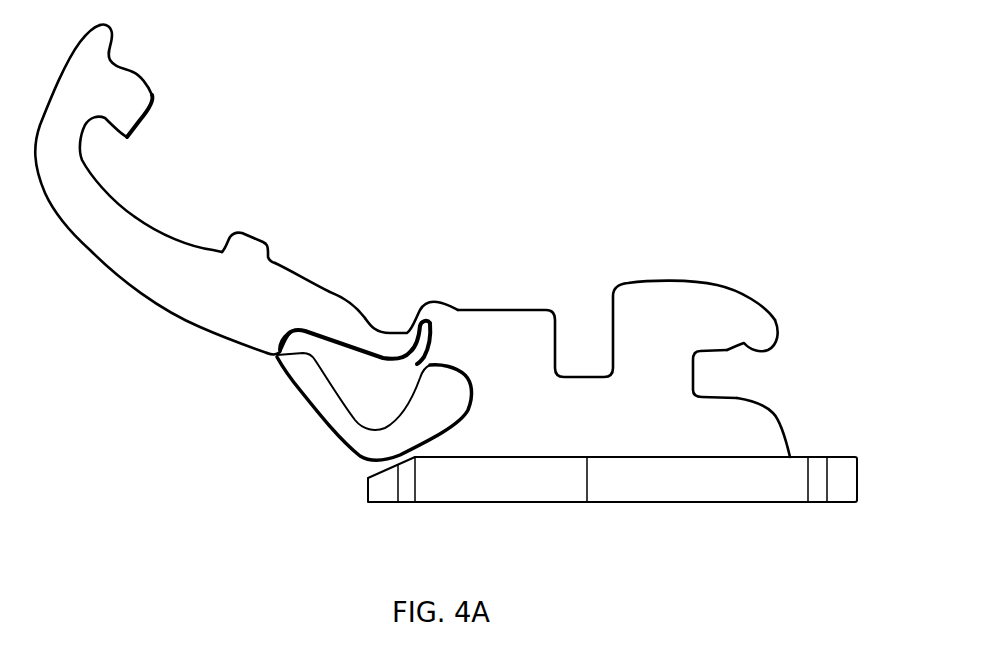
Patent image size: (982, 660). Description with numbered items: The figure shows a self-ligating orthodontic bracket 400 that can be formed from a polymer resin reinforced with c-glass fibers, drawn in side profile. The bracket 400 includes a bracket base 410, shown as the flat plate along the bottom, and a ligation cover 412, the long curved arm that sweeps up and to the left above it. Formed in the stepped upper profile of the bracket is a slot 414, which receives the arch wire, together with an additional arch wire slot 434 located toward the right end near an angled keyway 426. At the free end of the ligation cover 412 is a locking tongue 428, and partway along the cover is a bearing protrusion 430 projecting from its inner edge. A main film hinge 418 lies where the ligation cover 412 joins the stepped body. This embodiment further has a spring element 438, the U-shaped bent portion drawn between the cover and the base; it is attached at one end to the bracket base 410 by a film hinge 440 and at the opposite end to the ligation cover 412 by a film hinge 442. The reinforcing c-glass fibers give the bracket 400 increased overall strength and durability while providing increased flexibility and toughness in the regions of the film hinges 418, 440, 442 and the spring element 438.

The bracket 400 is at (703, 130).
The bracket base 410 is at (730, 492).
The ligation cover 412 is at (137, 268).
The slot 414 is at (582, 341).
The main film hinge 418 is at (407, 323).
The angled keyway 426 is at (756, 361).
The locking tongue 428 is at (127, 128).
The bearing protrusion 430 is at (257, 233).
The additional arch wire slot 434 is at (711, 365).
The spring element 438 is at (340, 440).
The film hinge 440 is at (457, 328).
The film hinge 442 is at (270, 355).